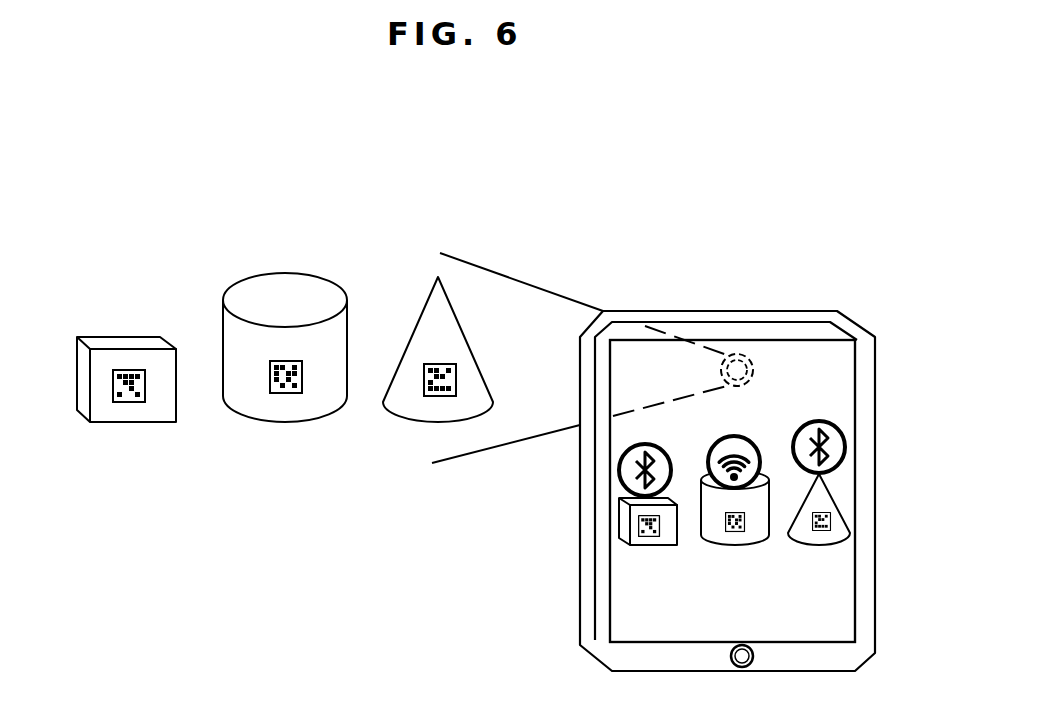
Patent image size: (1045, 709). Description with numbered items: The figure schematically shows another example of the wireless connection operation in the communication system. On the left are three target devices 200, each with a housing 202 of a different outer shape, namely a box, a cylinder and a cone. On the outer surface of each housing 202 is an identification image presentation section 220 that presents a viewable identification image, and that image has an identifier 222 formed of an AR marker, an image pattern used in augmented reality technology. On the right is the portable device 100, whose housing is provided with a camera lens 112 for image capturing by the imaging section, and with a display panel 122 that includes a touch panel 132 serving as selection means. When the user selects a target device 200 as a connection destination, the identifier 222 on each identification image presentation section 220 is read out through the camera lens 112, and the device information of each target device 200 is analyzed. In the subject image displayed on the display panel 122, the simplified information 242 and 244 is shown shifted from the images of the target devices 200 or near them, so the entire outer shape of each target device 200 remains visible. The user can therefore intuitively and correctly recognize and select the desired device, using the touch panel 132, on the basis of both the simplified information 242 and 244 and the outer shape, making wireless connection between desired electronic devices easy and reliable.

The portable device 100 is at (639, 302).
The camera lens 112 is at (734, 354).
The display panel 122 is at (813, 358).
The touch panel 132 is at (754, 455).
The target device 200 is at (101, 321).
The housing 202 is at (142, 345).
The identification image presentation section 220 is at (118, 416).
The identifier 222 is at (141, 400).
The simplified information 242 is at (618, 468).
The simplified information 244 is at (751, 440).